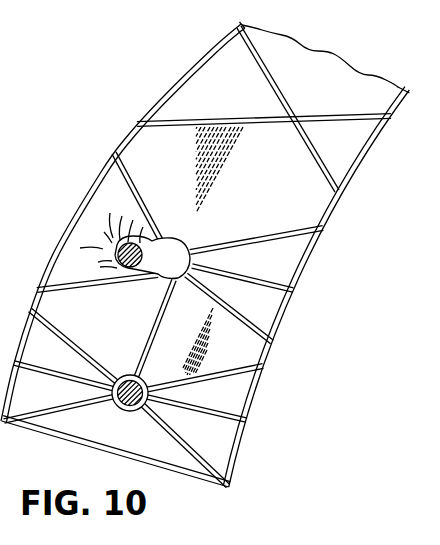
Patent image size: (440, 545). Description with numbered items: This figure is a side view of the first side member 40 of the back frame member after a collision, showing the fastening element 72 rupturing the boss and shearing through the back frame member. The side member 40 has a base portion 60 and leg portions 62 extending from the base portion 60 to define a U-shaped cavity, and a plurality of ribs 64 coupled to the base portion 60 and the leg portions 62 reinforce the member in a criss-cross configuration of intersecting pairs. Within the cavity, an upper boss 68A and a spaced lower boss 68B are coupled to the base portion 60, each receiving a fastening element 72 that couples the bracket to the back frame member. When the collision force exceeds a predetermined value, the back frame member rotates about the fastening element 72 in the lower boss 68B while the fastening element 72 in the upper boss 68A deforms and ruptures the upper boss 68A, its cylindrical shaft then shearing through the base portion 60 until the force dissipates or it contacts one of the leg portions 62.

The first side member 40 is at (205, 249).
The base portion 60 is at (199, 251).
The leg portions 62 is at (122, 139).
The ribs 64 is at (209, 50).
The upper boss 68A is at (194, 243).
The lower boss 68B is at (116, 406).
The fastening element 72 is at (113, 252).